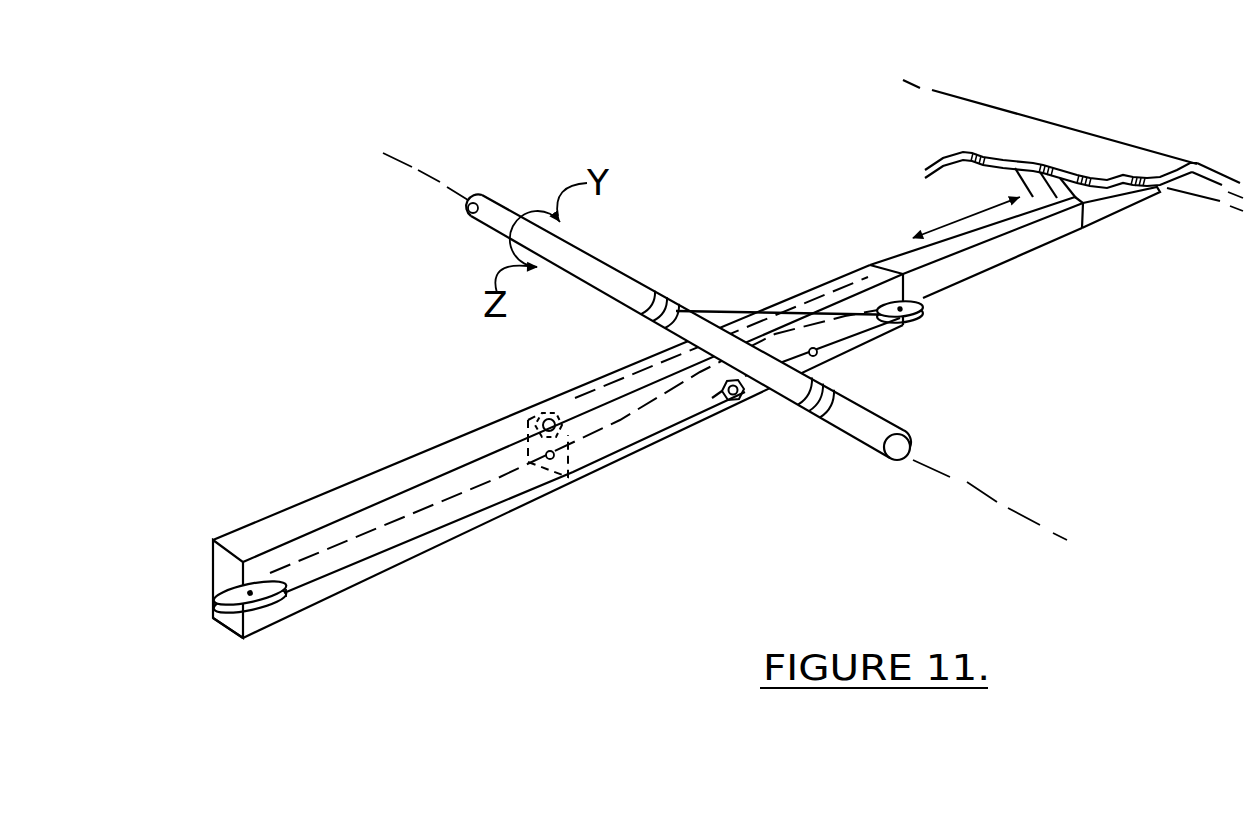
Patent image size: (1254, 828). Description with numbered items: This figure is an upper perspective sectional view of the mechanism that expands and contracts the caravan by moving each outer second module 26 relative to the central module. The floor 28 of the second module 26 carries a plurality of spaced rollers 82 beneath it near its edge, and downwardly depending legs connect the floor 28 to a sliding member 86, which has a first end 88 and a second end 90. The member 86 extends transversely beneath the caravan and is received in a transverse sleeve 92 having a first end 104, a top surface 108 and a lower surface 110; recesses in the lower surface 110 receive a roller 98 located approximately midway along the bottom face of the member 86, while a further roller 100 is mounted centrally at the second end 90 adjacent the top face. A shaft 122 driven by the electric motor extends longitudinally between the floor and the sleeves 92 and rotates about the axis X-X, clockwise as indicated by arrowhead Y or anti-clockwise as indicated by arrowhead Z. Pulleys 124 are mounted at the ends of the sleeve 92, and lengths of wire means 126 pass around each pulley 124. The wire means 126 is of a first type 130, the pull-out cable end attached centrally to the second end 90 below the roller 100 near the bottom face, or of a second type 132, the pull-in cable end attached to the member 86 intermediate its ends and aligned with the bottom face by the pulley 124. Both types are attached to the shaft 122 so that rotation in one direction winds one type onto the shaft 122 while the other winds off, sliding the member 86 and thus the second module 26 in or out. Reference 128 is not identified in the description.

The second module 26 is at (968, 96).
The floor 28 is at (1097, 142).
The roller 82 is at (1108, 201).
The sliding member 86 is at (1007, 253).
The first end 88 is at (1067, 240).
The second end 90 is at (570, 481).
The transverse sleeve 92 is at (273, 513).
The roller 98 is at (722, 394).
The roller 100 is at (540, 412).
The first end 104 is at (272, 634).
The top surface 108 is at (338, 500).
The lower surface 110 is at (382, 578).
The shaft 122 is at (885, 424).
The pulley 124 is at (212, 593).
The wire means 126 is at (335, 582).
The cable 128 is at (557, 487).
The first type 130 is at (793, 407).
The second type 132 is at (707, 310).